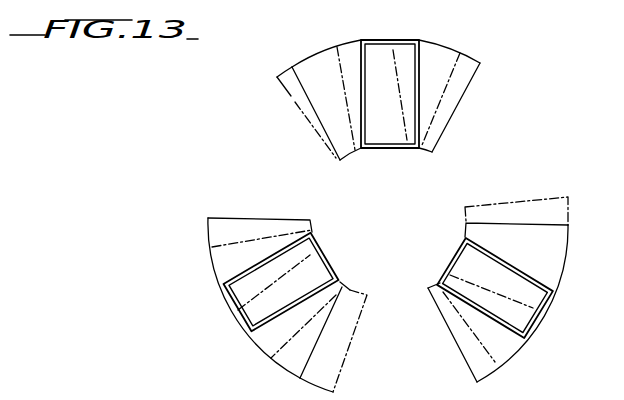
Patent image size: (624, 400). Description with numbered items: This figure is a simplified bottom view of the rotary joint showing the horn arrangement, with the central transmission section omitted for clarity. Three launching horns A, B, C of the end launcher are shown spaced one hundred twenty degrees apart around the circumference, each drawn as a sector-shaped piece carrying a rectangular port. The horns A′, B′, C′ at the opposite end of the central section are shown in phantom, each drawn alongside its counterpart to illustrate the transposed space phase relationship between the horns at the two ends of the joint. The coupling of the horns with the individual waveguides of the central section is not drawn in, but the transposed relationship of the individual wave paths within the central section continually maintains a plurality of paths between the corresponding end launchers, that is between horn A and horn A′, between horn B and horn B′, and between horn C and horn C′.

The launching horn A is at (459, 96).
The launching horn A' is at (516, 195).
The launching horn B is at (279, 279).
The launching horn B' is at (346, 341).
The launching horn C is at (458, 332).
The launching horn C' is at (286, 112).